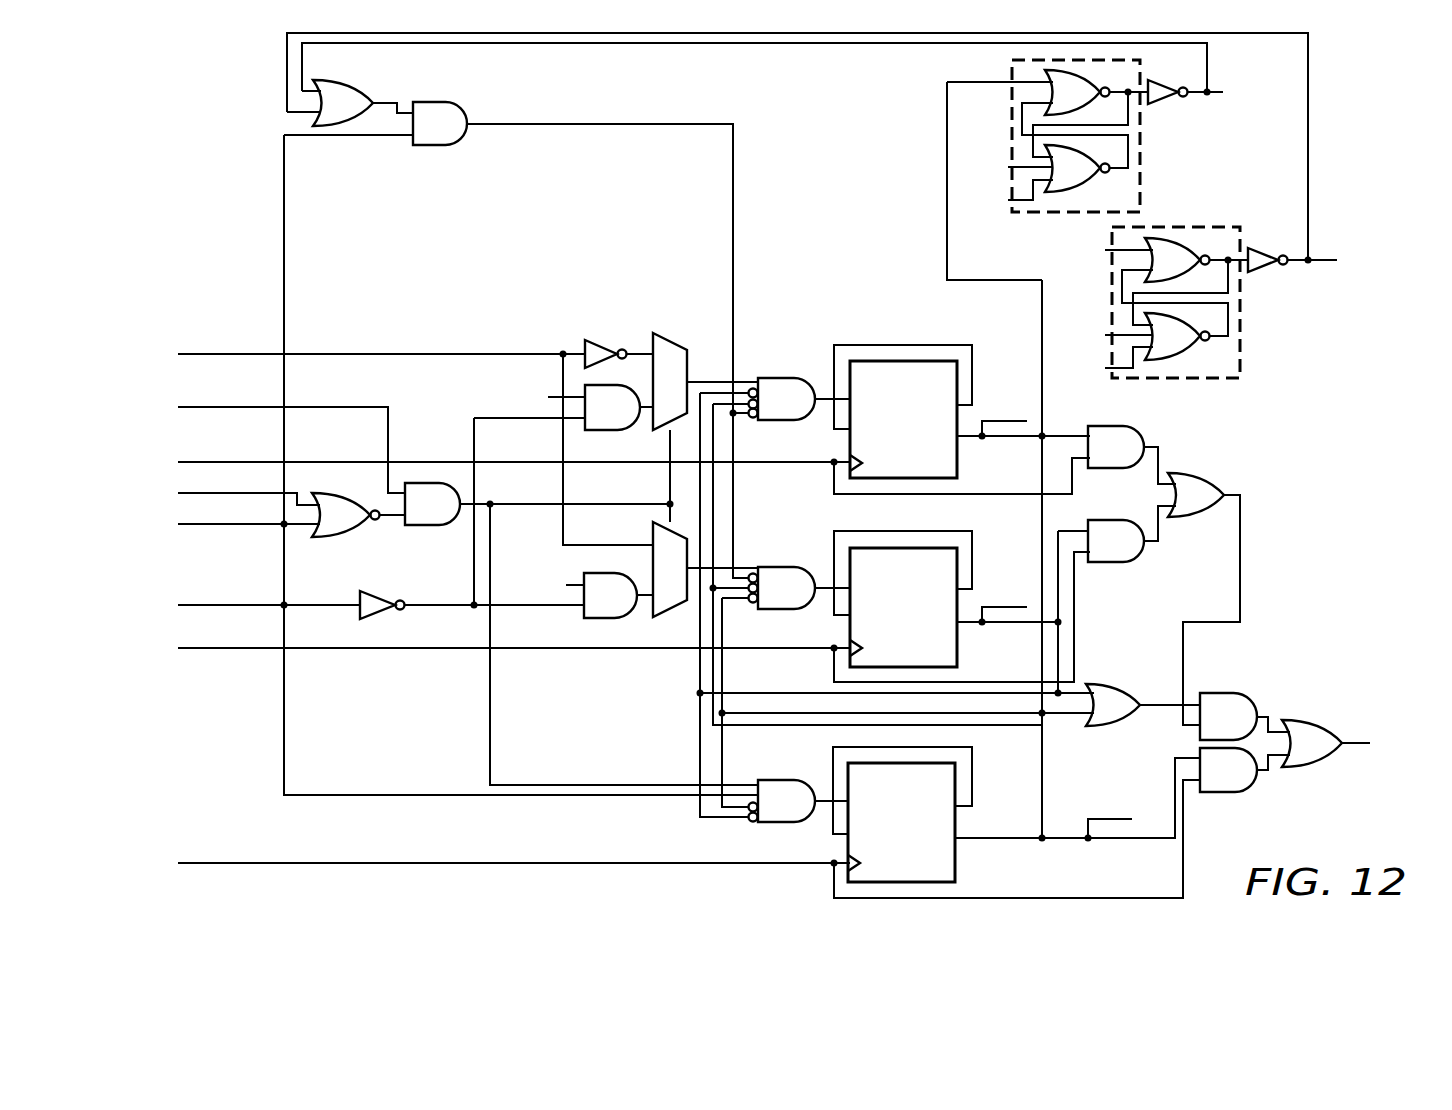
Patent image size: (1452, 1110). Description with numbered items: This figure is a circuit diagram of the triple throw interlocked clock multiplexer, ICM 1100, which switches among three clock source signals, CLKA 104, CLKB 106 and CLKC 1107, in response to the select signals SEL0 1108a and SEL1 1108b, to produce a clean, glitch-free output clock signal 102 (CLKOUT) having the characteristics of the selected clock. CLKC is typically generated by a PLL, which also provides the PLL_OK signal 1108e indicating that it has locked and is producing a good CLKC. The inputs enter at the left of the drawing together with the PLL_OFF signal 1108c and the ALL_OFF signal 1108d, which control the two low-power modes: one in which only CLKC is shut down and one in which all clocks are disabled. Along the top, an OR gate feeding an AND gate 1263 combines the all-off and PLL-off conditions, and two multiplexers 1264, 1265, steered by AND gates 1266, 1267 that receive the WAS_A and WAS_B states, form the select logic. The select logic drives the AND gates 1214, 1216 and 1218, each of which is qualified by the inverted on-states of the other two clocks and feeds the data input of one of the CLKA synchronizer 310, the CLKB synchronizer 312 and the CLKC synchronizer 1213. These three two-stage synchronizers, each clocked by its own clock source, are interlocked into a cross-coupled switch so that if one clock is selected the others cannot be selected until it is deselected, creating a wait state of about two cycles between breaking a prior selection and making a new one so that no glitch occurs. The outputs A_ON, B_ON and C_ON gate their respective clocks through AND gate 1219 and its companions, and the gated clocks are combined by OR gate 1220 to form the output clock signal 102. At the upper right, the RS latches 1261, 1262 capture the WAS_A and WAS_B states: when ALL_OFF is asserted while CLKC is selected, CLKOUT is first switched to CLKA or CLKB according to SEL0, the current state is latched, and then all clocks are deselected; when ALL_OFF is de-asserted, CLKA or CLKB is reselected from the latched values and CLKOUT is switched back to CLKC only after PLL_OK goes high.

The interlocked clock multiplexer 1100 is at (200, 93).
The AND gate 1263 is at (426, 101).
The select signal SEL0 1108a is at (204, 353).
The select signal SEL1 1108b is at (236, 407).
The clock source signal CLKA 104 is at (226, 461).
The PLL_OFF signal 1108c is at (272, 498).
The ALL_OFF signal 1108d is at (195, 527).
The PLL_OK signal 1108e is at (270, 610).
The clock source signal CLKB 106 is at (195, 650).
The clock source signal CLKC 1107 is at (213, 865).
The multiplexer 1264 is at (670, 333).
The multiplexer 1265 is at (670, 617).
The AND gate 1266 is at (615, 432).
The AND gate 1267 is at (598, 620).
The AND gate 1214 is at (788, 377).
The AND gate 1216 is at (787, 566).
The AND gate 1218 is at (785, 780).
The CLKA synchronizer 310 is at (903, 361).
The CLKB synchronizer 312 is at (958, 643).
The CLKC synchronizer 1213 is at (958, 860).
The AND gate 1219 is at (1144, 428).
The OR gate 1220 is at (1303, 768).
The output clock signal 102 is at (1357, 746).
The RS latch 1261 is at (1140, 160).
The RS latch 1262 is at (1240, 348).